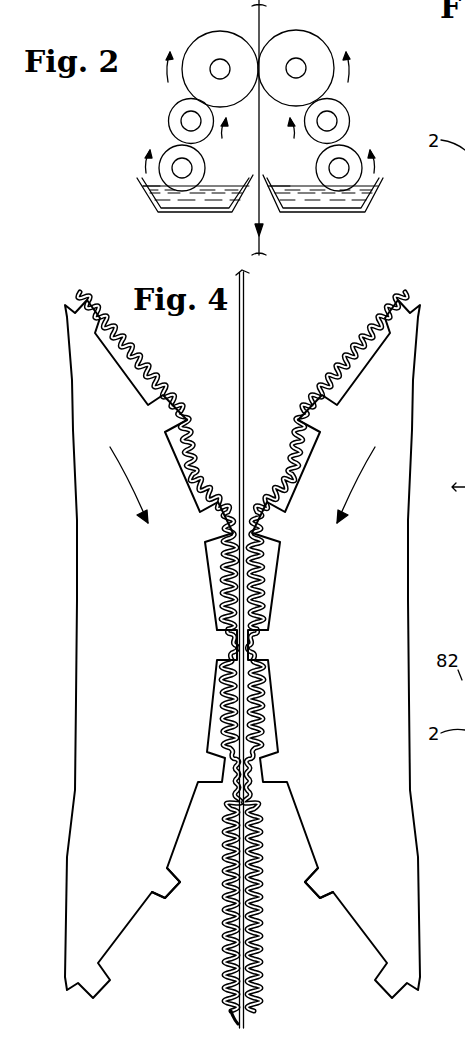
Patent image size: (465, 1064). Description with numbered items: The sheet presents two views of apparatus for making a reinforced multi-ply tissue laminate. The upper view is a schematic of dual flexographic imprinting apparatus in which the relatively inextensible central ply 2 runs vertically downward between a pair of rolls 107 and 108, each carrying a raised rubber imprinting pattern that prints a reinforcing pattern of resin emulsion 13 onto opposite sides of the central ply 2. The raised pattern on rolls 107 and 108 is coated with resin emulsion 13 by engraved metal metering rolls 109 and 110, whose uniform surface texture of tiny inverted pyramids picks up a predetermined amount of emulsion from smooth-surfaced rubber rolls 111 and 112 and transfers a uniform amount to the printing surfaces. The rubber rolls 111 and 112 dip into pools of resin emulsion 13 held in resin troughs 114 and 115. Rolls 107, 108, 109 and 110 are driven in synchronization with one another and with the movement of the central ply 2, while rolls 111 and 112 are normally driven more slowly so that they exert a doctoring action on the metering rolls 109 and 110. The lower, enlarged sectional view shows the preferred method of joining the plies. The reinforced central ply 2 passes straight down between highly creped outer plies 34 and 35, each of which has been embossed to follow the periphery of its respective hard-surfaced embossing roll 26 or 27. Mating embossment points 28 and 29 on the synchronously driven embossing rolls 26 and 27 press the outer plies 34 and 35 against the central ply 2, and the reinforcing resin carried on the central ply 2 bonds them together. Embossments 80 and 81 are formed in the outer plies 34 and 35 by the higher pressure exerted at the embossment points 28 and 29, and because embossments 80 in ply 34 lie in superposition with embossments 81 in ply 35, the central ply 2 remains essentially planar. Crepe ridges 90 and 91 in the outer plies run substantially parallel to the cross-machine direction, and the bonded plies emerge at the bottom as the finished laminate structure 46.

In FIG. 2, the central ply 2 is at (290, 0).
In FIG. 4, the central ply 2 is at (244, 323).
In FIG. 2, the resin emulsion 13 is at (215, 186).
In FIG. 2, the raised rubber imprinting pattern roll 107 is at (203, 35).
In FIG. 2, the raised rubber imprinting pattern roll 108 is at (315, 33).
In FIG. 2, the engraved metal metering roll 109 is at (168, 118).
In FIG. 2, the engraved metal metering roll 110 is at (350, 110).
In FIG. 2, the smooth-surfaced rubber roll 111 is at (166, 152).
In FIG. 2, the smooth-surfaced rubber roll 112 is at (355, 150).
In FIG. 2, the resin trough 114 is at (195, 213).
In FIG. 2, the resin trough 115 is at (325, 213).
In FIG. 4, the embossing roll 26 is at (90, 580).
In FIG. 4, the embossing roll 27 is at (395, 580).
In FIG. 4, the embossment point 28 is at (180, 887).
In FIG. 4, the embossment point 29 is at (313, 887).
In FIG. 4, the outer ply 34 is at (138, 363).
In FIG. 4, the outer ply 35 is at (347, 357).
In FIG. 4, the laminate structure 46 is at (240, 998).
In FIG. 4, the embossment 80 is at (184, 414).
In FIG. 4, the embossment 81 is at (310, 400).
In FIG. 4, the crepe ridge 90 is at (210, 500).
In FIG. 4, the crepe ridge 91 is at (275, 500).